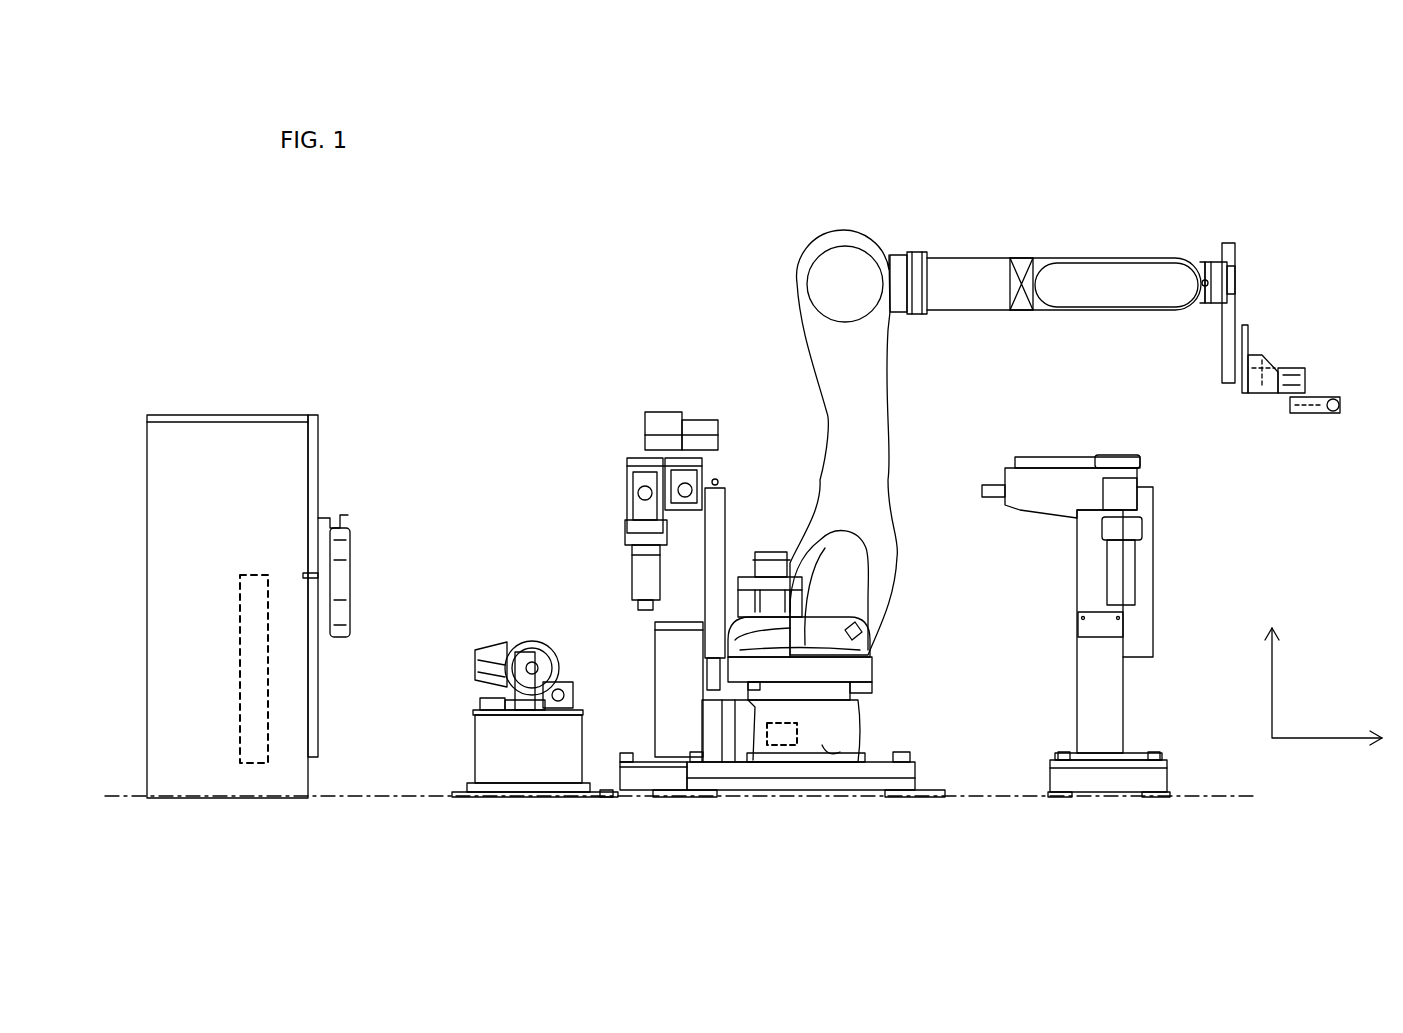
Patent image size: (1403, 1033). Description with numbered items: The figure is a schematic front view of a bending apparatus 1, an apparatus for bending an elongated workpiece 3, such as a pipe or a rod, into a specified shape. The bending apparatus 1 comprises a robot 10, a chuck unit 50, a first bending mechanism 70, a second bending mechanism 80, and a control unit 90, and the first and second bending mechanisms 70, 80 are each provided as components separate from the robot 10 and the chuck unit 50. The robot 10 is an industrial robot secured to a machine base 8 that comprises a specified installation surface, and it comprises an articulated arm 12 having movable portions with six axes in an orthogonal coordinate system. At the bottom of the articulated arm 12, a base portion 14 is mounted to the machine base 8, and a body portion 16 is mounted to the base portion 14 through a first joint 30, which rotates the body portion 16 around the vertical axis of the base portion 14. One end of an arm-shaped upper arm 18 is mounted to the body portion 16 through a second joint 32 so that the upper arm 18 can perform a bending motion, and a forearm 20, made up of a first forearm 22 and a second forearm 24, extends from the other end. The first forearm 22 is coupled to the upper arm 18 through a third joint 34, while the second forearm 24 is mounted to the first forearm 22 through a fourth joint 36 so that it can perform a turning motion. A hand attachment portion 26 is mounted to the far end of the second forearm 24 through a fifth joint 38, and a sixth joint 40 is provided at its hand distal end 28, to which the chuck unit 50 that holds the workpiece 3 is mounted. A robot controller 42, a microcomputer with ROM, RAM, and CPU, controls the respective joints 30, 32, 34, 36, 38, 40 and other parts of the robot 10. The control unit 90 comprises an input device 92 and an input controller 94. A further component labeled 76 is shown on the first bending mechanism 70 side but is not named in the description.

The bending apparatus 1 is at (895, 125).
The workpiece 3 is at (1335, 395).
The machine base 8 is at (855, 798).
The robot 10 is at (768, 308).
The articulated arm 12 is at (840, 213).
The base portion 14 is at (847, 738).
The body portion 16 is at (764, 640).
The upper arm 18 is at (830, 412).
The forearm 20 is at (1105, 205).
The first forearm 22 is at (892, 258).
The second forearm 24 is at (1092, 262).
The hand attachment portion 26 is at (1203, 268).
The hand distal end 28 is at (1213, 248).
The first joint 30 is at (865, 703).
The second joint 32 is at (907, 562).
The third joint 34 is at (812, 257).
The fourth joint 36 is at (930, 320).
The fifth joint 38 is at (1193, 312).
The sixth joint 40 is at (1230, 275).
The robot controller 42 is at (783, 745).
The chuck unit 50 is at (1270, 350).
The first bending mechanism 70 is at (643, 400).
The supply device 76 is at (514, 632).
The second bending mechanism 80 is at (1090, 440).
The control unit 90 is at (252, 390).
The input device 92 is at (350, 530).
The input controller 94 is at (253, 763).